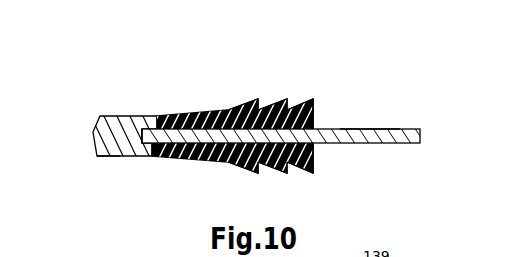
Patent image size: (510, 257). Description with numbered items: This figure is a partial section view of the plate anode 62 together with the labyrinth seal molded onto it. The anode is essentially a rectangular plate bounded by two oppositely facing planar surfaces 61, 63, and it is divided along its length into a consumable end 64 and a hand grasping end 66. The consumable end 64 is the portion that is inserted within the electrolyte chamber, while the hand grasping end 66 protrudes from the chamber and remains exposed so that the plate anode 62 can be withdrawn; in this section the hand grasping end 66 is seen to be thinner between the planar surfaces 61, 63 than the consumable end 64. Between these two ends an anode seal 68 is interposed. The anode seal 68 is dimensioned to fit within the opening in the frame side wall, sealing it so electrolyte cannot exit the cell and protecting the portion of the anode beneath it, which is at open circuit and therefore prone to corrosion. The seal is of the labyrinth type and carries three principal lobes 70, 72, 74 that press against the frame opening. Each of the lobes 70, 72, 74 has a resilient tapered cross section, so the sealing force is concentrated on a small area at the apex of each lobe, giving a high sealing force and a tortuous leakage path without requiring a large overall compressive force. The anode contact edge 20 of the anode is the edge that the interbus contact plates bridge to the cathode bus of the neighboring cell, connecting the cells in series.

The anode contact edge 20 is at (422, 132).
The planar surface 61 is at (113, 116).
The plate anode 62 is at (140, 78).
The planar surface 63 is at (113, 157).
The consumable end 64 is at (140, 139).
The hand grasping end 66 is at (367, 130).
The anode seal 68 is at (230, 106).
The lobe 70 is at (259, 102).
The lobe 72 is at (287, 102).
The lobe 74 is at (313, 104).